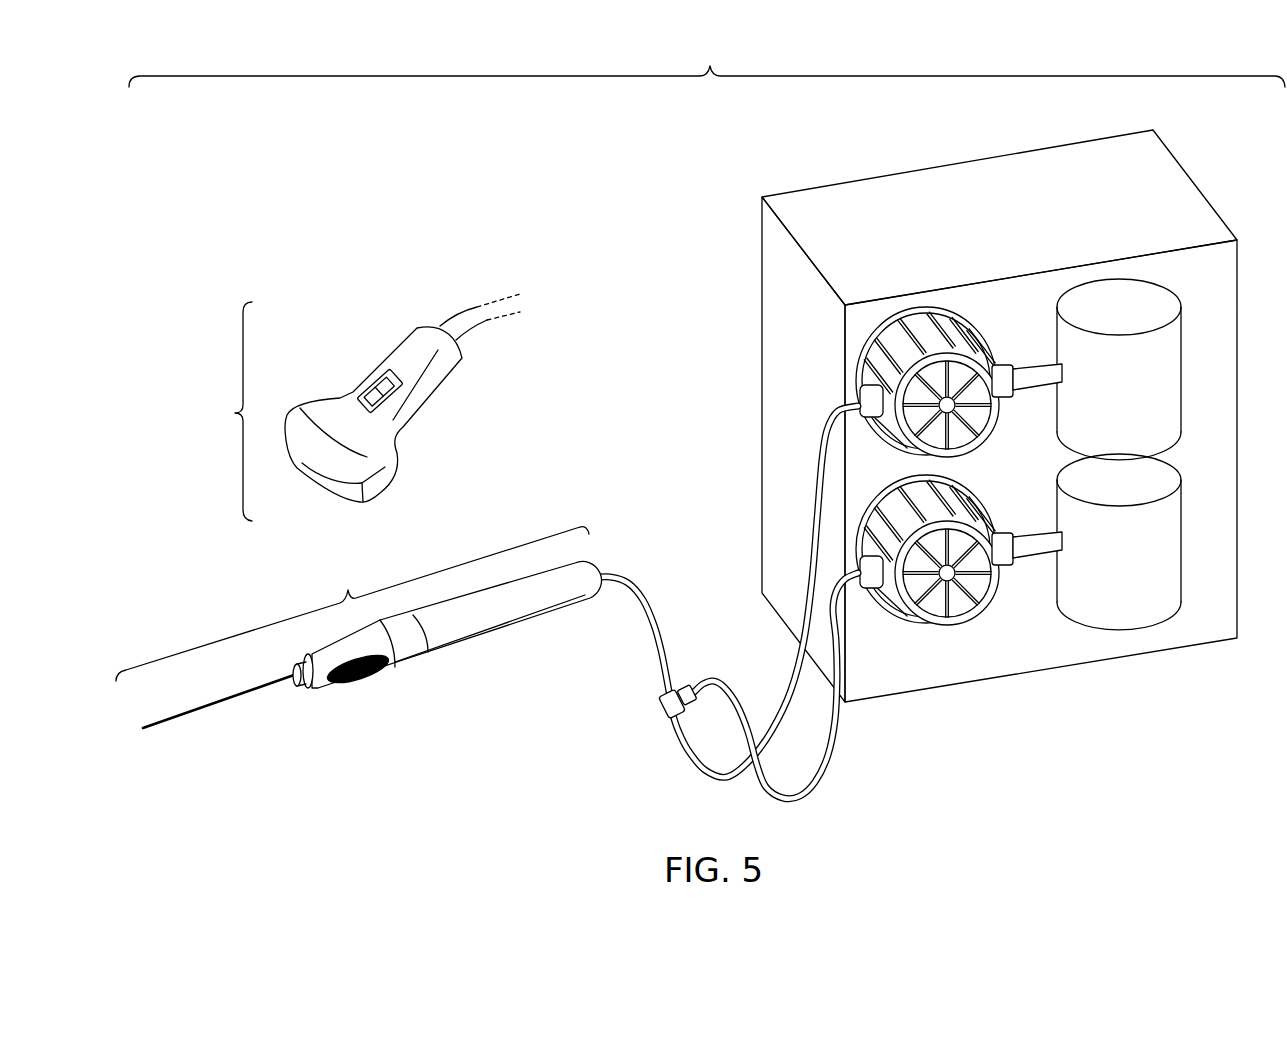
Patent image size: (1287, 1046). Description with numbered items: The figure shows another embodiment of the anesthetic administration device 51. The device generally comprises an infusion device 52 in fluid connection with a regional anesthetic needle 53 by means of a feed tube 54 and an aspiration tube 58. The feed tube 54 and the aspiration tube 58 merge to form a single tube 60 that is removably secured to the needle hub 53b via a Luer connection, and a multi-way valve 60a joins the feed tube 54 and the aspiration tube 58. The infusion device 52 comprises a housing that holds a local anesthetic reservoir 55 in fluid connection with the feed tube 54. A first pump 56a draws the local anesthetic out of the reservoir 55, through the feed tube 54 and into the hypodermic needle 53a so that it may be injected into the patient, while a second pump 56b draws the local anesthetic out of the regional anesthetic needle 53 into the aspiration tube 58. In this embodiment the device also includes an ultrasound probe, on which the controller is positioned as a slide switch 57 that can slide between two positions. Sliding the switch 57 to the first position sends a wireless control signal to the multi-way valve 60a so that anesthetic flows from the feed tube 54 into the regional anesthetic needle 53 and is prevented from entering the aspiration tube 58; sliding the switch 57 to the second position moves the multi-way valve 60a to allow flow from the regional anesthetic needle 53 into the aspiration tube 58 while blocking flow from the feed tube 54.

The anesthetic administration device 51 is at (707, 63).
The infusion device 52 is at (1040, 673).
The regional anesthetic needle 53 is at (359, 660).
The hypodermic needle 53a is at (227, 703).
The needle hub 53b is at (463, 620).
The feed tube 54 is at (815, 493).
The local anesthetic reservoir 55 is at (1173, 357).
The first pump 56a is at (883, 367).
The second pump 56b is at (935, 612).
The slide switch 57 is at (372, 393).
The aspiration tube 58 is at (833, 747).
The single tube 60 is at (640, 593).
The multi-way valve 60a is at (660, 707).